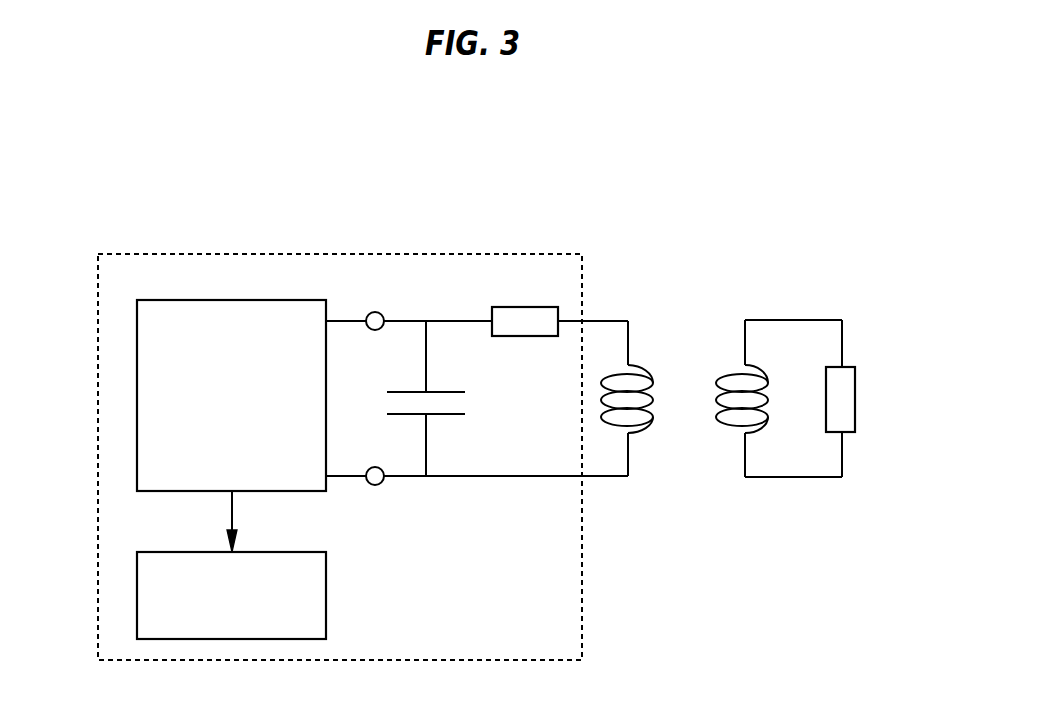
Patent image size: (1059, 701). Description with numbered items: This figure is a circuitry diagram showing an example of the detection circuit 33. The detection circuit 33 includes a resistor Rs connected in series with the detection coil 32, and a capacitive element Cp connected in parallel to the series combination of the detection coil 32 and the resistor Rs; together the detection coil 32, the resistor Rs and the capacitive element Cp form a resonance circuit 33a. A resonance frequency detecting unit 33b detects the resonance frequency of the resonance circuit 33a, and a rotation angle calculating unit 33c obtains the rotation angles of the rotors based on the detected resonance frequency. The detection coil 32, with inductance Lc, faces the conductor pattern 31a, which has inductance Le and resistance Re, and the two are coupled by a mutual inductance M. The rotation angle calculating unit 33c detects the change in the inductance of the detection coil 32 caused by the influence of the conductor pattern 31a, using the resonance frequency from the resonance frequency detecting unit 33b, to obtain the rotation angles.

The detection circuit 33 is at (98, 254).
The resonance circuit 33a is at (457, 292).
The resonance frequency detecting unit 33b is at (137, 395).
The rotation angle calculating unit 33c is at (137, 599).
The detection coil 32 is at (638, 357).
The conductor pattern 31a is at (837, 310).